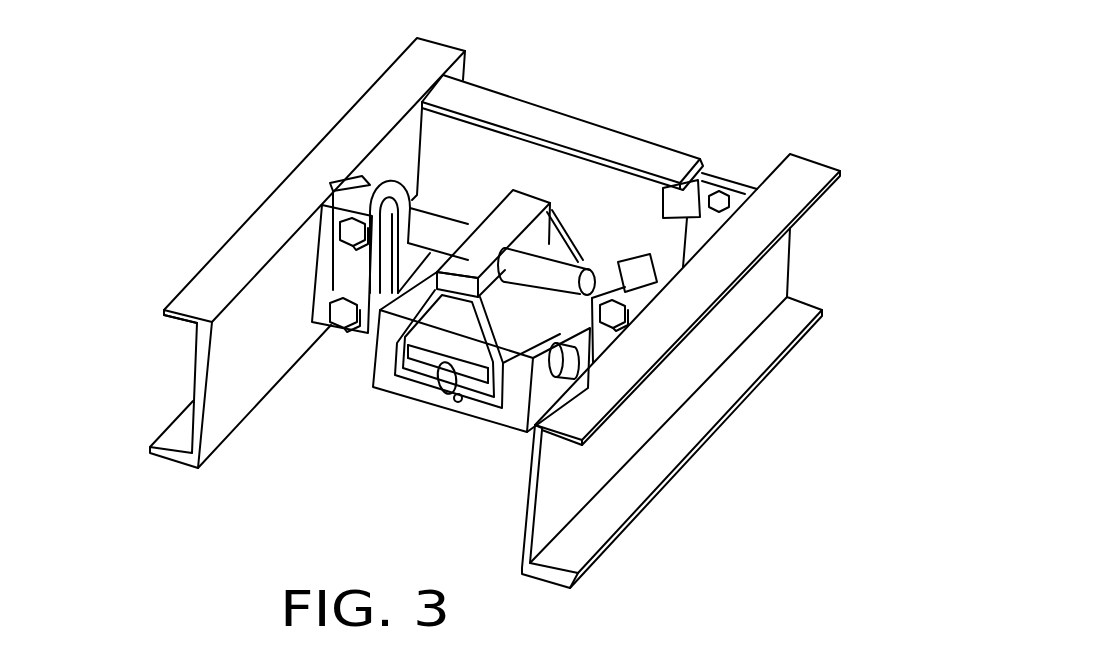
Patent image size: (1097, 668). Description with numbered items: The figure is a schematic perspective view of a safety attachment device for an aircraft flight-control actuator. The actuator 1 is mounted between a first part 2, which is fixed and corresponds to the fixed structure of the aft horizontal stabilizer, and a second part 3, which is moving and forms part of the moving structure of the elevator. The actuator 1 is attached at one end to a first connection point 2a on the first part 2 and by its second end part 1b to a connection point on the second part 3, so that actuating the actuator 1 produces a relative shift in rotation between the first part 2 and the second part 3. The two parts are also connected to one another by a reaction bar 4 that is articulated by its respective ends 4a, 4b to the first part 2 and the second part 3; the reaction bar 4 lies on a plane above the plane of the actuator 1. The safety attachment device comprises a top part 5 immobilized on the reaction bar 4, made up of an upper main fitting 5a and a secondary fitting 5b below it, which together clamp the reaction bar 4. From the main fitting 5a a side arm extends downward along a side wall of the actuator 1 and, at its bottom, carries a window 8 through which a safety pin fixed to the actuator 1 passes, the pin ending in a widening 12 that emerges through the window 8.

The actuator 1 is at (487, 418).
The second end part 1b is at (578, 353).
The first part 2 is at (196, 361).
The first connection point 2a is at (343, 318).
The second part 3 is at (656, 402).
The reaction bar 4 is at (425, 248).
The end of reaction bar 4a is at (367, 186).
The end of reaction bar 4b is at (622, 287).
The top part 5 is at (527, 206).
The upper main fitting 5a is at (548, 196).
The secondary fitting 5b is at (703, 165).
The window 8 is at (420, 362).
The widening 12 is at (448, 376).